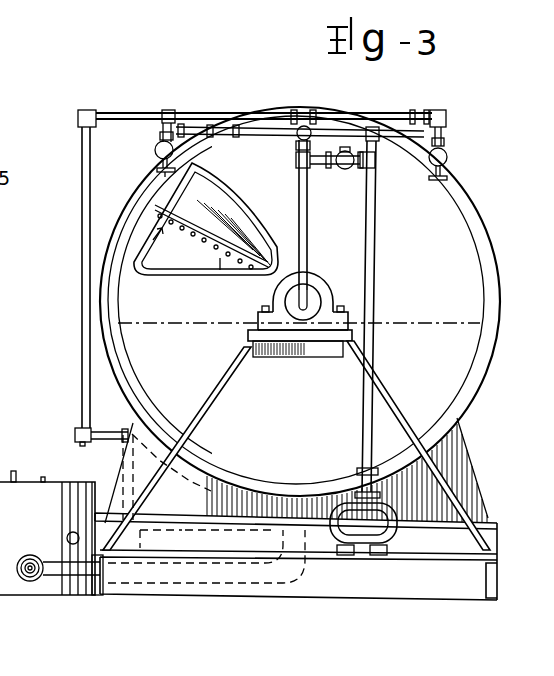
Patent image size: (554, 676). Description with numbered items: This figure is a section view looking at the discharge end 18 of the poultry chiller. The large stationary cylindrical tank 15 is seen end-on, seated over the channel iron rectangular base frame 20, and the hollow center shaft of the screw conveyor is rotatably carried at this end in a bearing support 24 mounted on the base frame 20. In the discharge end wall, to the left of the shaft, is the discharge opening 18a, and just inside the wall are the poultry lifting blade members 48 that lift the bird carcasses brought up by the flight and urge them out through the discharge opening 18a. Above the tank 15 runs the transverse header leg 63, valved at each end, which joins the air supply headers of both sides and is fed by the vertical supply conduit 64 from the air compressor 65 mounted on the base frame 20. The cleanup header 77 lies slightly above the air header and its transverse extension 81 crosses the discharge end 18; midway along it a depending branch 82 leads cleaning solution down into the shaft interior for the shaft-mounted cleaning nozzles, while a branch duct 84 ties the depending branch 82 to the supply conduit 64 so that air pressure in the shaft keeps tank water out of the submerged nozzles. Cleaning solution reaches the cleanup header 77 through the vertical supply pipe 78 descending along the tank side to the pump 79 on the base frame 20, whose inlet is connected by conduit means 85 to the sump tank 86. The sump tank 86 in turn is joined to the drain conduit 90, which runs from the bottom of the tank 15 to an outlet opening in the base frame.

The cylindrical tank 15 is at (497, 224).
The discharge end 18 is at (200, 349).
The discharge opening 18a is at (188, 268).
The base frame 20 is at (377, 588).
The bearing supports 24 is at (272, 302).
The poultry lifting blade members 48 is at (229, 206).
The transverse header leg 63 is at (232, 127).
The vertical supply conduit 64 is at (378, 238).
The air compressor 65 is at (380, 533).
The cleanup header 77 is at (168, 112).
The vertical supply pipe 78 is at (80, 245).
The pump 79 is at (177, 539).
The transverse extension of the header 81 is at (283, 110).
The depending branch 82 is at (308, 256).
The branch duct 84 is at (339, 167).
The conduit means 85 is at (62, 576).
The sump tank 86 is at (50, 532).
The drain conduit 90 is at (285, 534).